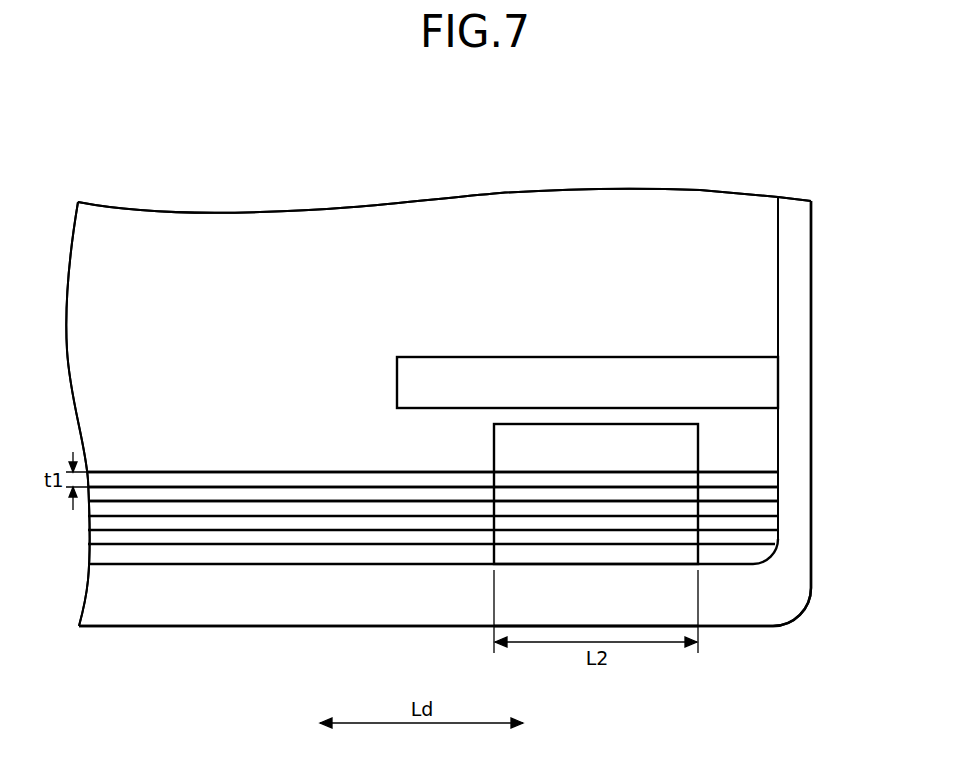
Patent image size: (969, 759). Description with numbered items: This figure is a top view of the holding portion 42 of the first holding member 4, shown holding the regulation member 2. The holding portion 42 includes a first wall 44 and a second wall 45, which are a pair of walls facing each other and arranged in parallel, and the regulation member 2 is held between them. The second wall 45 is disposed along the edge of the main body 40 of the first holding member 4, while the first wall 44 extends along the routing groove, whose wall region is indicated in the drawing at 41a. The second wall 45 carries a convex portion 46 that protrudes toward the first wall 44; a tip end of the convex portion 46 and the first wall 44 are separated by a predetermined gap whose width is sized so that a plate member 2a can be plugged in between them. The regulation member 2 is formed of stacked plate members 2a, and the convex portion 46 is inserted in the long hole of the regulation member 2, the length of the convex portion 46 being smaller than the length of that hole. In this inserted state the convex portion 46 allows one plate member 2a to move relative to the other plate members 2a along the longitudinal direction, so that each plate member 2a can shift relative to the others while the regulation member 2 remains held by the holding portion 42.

The first holding member 4 is at (441, 196).
The main body 40 is at (605, 189).
The first portion of head (41) 41a is at (343, 283).
The holding portion 42 is at (764, 630).
The first wall 44 is at (647, 378).
The convex portion 46 is at (700, 441).
The regulation member 2 is at (862, 432).
The plate member 2a is at (771, 480).
The second wall 45 is at (718, 614).